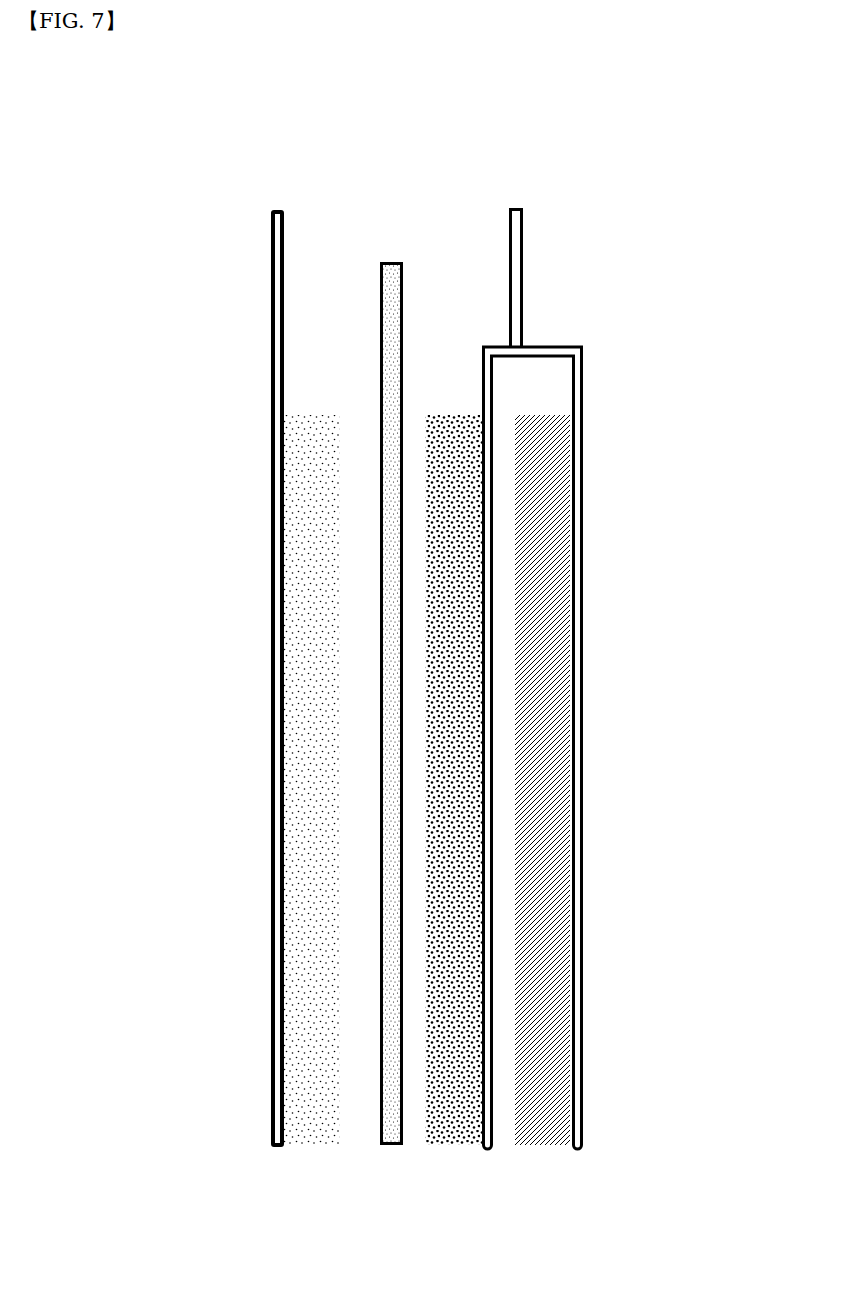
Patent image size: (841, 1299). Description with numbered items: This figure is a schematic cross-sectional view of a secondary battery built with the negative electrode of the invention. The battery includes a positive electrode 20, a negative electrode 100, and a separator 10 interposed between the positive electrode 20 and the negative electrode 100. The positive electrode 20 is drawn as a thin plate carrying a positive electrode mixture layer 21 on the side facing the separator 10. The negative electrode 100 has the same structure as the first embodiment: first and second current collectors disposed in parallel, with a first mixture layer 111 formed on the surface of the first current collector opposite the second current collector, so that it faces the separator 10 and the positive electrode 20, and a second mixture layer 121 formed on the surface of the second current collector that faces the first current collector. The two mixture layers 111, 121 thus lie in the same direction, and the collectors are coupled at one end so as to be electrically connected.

The separator 10 is at (392, 262).
The positive electrode 20 is at (232, 276).
The positive electrode mixture layer 21 is at (312, 737).
The negative electrode 100 is at (592, 282).
The first mixture layer 111 is at (462, 900).
The second mixture layer 121 is at (545, 695).